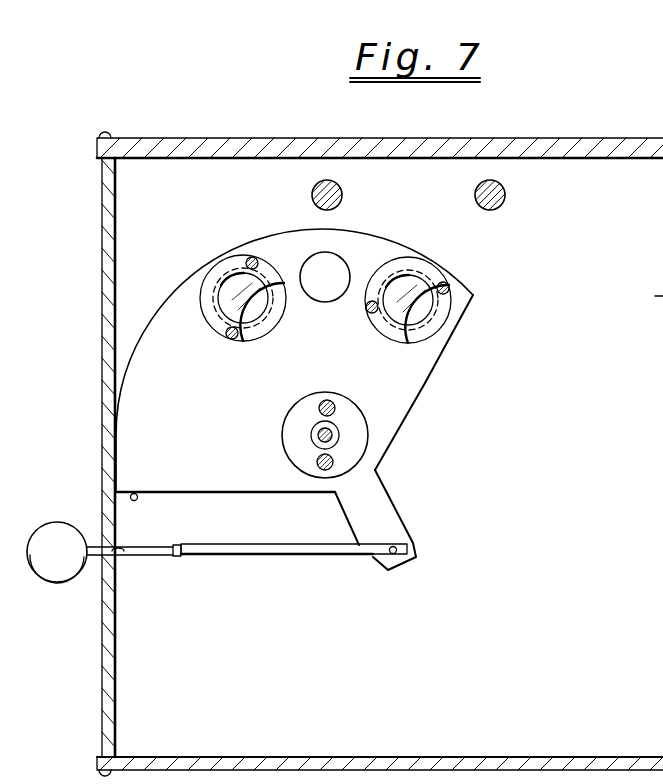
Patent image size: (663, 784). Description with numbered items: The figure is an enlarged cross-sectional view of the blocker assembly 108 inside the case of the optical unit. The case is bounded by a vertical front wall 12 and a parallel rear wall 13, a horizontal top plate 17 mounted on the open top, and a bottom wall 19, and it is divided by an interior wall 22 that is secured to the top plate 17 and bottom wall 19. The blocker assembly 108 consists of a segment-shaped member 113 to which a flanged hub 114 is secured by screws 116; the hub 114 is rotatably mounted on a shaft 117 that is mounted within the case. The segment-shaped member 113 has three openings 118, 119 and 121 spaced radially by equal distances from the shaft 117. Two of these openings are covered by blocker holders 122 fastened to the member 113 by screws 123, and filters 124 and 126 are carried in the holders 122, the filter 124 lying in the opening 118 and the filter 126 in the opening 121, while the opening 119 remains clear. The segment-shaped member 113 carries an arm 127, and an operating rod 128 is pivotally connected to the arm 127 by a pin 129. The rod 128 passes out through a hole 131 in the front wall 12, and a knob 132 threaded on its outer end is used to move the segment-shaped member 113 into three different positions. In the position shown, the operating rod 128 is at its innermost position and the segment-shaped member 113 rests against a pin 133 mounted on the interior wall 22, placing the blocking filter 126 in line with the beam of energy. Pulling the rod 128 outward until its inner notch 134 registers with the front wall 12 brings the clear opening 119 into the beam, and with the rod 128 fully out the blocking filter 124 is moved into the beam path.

The front wall 12 is at (118, 668).
The rear wall 13 is at (662, 297).
The top plate 17 is at (566, 138).
The bottom wall 19 is at (482, 757).
The interior wall 22 is at (447, 636).
The blocker assembly 108 is at (562, 294).
The segment-shaped member 113 is at (420, 382).
The flanged hub 114 is at (358, 448).
The screws 116 is at (318, 462).
The shaft 117 is at (334, 434).
The opening 118 is at (218, 283).
The opening 119 is at (333, 255).
The opening 121 is at (417, 272).
The blocker holders 122 is at (236, 262).
The screws 123 is at (228, 337).
The filter 124 is at (232, 303).
The filter 126 is at (422, 293).
The arm 127 is at (388, 523).
The operating rod 128 is at (282, 552).
The pin 129 is at (400, 541).
The hole 131 is at (120, 556).
The knob 132 is at (57, 533).
The pin 133 is at (136, 500).
The inner notch 134 is at (180, 545).